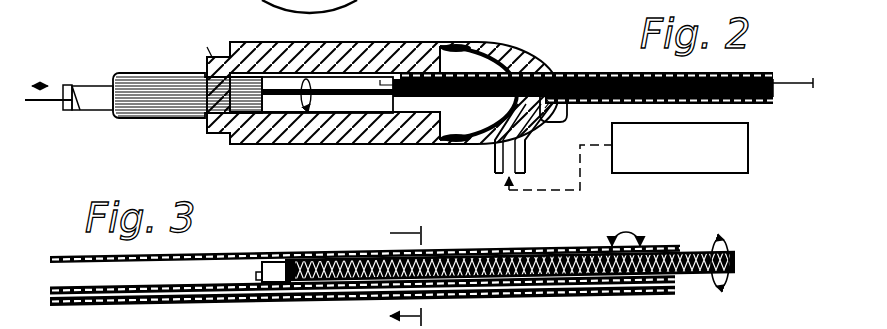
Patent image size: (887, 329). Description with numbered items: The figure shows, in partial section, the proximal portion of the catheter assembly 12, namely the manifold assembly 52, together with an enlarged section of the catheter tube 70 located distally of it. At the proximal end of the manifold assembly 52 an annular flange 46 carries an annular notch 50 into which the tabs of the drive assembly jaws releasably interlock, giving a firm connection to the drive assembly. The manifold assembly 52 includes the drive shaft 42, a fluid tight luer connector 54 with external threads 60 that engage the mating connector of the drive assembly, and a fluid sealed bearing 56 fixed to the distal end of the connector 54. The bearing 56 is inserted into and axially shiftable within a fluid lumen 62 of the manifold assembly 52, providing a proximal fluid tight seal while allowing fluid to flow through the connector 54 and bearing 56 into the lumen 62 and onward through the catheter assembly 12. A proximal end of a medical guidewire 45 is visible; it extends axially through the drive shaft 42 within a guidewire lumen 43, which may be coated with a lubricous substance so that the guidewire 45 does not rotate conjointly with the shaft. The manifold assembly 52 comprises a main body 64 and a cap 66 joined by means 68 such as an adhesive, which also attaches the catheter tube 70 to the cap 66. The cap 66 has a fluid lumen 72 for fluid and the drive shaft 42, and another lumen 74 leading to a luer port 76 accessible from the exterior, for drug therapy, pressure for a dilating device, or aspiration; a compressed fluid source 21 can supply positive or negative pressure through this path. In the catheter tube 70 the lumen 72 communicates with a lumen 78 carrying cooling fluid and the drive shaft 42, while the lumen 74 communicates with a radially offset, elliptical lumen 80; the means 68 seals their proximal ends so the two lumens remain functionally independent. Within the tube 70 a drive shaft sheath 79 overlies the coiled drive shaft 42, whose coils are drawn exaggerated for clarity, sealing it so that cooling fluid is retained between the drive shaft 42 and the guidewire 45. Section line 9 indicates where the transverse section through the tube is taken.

In FIG. 3, the section line 9- 9 is at (391, 277).
In FIG. 2, the catheter assembly 12 is at (588, 44).
In FIG. 3, the catheter assembly 12 is at (668, 242).
In FIG. 2, the compressed fluid source 21 is at (748, 165).
In FIG. 2, the drive shaft 42 is at (282, 82).
In FIG. 3, the drive shaft 42 is at (290, 256).
In FIG. 3, the guidewire lumen 43 is at (303, 250).
In FIG. 2, the medical guidewire 45 is at (47, 100).
In FIG. 2, the annular flange 46 is at (207, 48).
In FIG. 2, the annular notch 50 is at (217, 57).
In FIG. 2, the manifold assembly 52 is at (381, 55).
In FIG. 2, the connector 54 is at (102, 110).
In FIG. 2, the fluid sealed bearing 56 is at (163, 118).
In FIG. 2, the external threads 60 is at (90, 85).
In FIG. 2, the fluid lumen 62 is at (332, 80).
In FIG. 2, the main body 64 is at (392, 122).
In FIG. 2, the cap 66 is at (531, 50).
In FIG. 2, the joining means 68 is at (467, 143).
In FIG. 2, the catheter tube 70 is at (716, 78).
In FIG. 3, the catheter tube 70 is at (542, 250).
In FIG. 2, the fluid lumen 72 is at (530, 137).
In FIG. 2, the lumen 74 is at (495, 150).
In FIG. 2, the port 76 is at (520, 163).
In FIG. 2, the lumen 78 is at (800, 57).
In FIG. 3, the lumen 78 is at (71, 262).
In FIG. 3, the drive shaft sheath 79 is at (262, 279).
In FIG. 2, the lumen 80 is at (567, 112).